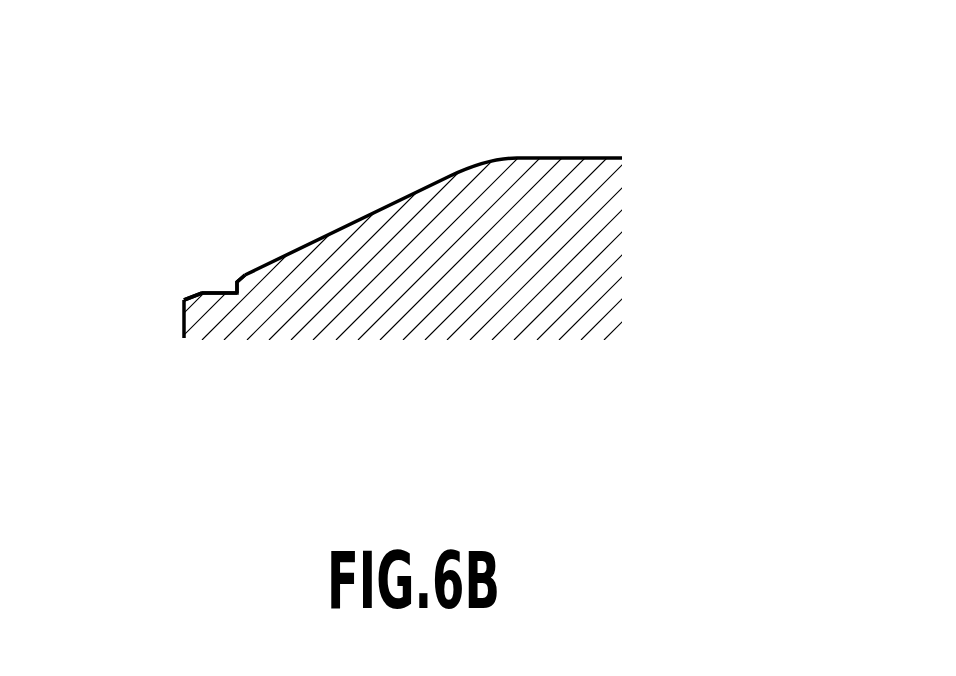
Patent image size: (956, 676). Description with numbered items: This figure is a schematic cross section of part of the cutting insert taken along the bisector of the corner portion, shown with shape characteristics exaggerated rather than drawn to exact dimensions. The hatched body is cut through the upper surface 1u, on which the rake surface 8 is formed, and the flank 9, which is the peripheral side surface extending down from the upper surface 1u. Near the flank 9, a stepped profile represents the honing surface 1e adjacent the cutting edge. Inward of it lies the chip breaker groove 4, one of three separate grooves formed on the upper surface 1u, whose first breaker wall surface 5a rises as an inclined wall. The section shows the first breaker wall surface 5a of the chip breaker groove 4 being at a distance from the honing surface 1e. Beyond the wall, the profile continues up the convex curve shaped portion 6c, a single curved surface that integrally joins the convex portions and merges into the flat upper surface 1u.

The upper surface 1u is at (558, 158).
The honing surface 1e is at (192, 297).
The chip breaker groove 4 is at (212, 273).
The first breaker wall surface 5a is at (232, 283).
The convex curve shaped portion 6c is at (323, 237).
The rake surface 8 is at (187, 168).
The flank 9 is at (183, 330).